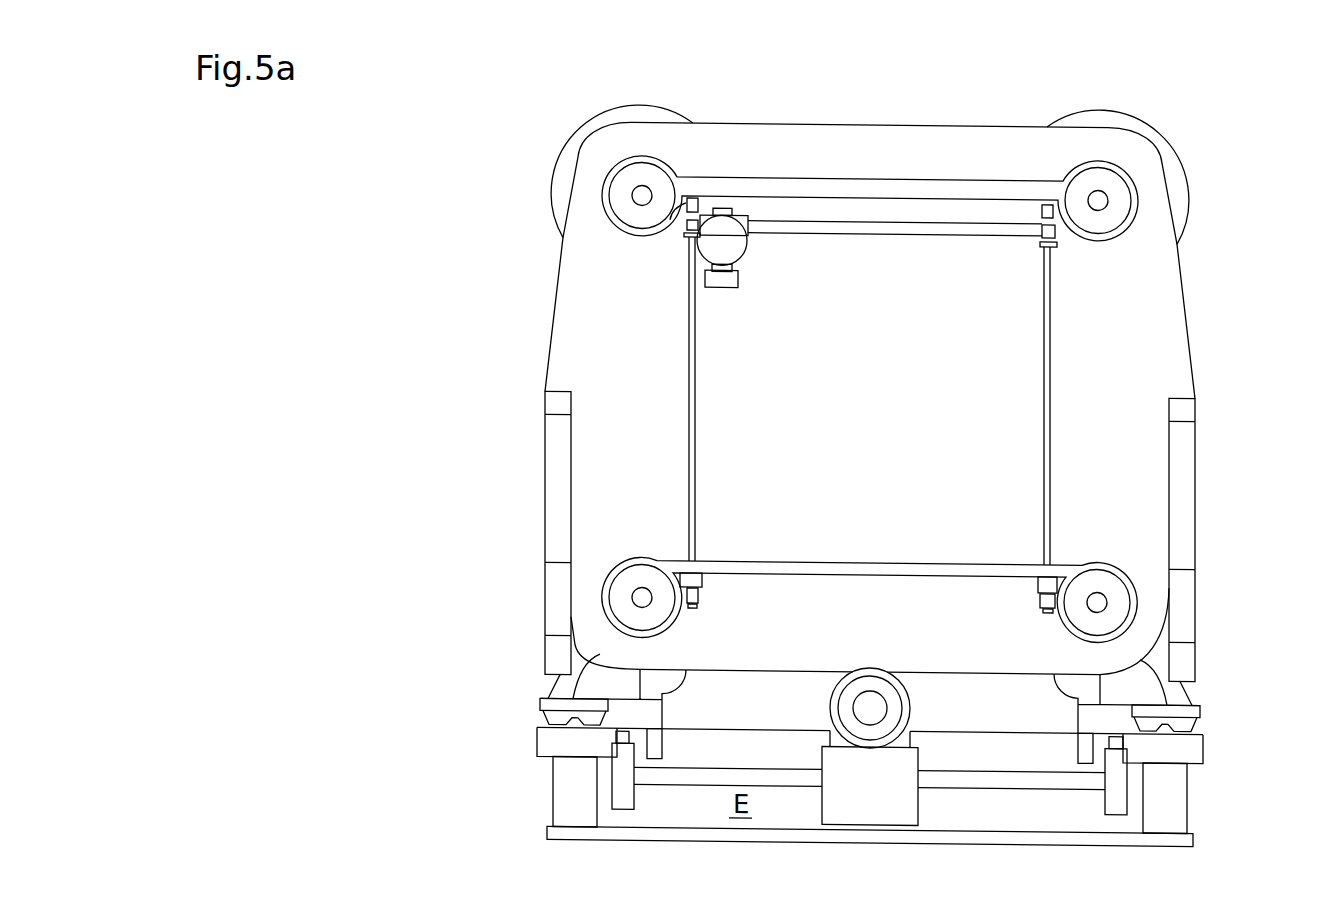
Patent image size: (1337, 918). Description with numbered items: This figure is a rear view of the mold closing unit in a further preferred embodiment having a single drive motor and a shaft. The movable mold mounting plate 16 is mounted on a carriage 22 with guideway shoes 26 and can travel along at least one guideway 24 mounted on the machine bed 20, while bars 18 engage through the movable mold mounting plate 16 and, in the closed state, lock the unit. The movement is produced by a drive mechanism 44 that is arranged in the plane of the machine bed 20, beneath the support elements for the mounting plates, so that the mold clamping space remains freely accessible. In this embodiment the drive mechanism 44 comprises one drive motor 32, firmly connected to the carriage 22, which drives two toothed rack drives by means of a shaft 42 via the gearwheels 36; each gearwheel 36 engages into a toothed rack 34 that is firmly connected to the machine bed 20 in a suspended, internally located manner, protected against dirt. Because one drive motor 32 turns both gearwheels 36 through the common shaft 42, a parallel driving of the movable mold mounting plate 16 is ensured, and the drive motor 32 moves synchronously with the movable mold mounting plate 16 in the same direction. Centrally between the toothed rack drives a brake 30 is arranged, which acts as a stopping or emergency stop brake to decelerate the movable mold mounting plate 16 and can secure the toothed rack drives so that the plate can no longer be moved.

The movable mold mounting plate 16 is at (1112, 337).
The bars 18 is at (1107, 220).
The machine bed 20 is at (1170, 814).
The carriage 22 is at (1098, 720).
The guideway 24 is at (1190, 712).
The guideway shoes 26 is at (1177, 684).
The brake 30 is at (863, 712).
The drive motor 32 is at (900, 793).
The toothed rack 34 is at (623, 793).
The gearwheel 36 is at (610, 748).
The shaft 42 is at (983, 786).
The drive mechanism 44 is at (1027, 811).